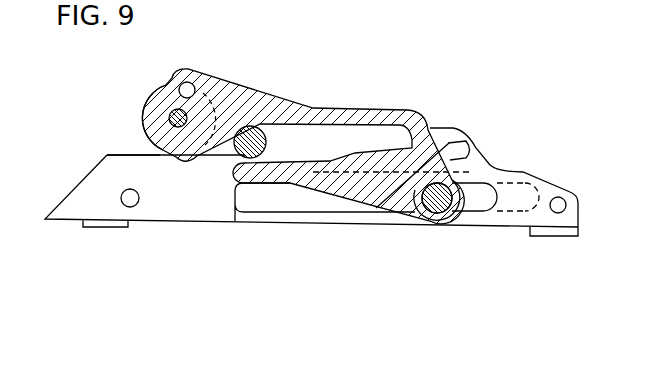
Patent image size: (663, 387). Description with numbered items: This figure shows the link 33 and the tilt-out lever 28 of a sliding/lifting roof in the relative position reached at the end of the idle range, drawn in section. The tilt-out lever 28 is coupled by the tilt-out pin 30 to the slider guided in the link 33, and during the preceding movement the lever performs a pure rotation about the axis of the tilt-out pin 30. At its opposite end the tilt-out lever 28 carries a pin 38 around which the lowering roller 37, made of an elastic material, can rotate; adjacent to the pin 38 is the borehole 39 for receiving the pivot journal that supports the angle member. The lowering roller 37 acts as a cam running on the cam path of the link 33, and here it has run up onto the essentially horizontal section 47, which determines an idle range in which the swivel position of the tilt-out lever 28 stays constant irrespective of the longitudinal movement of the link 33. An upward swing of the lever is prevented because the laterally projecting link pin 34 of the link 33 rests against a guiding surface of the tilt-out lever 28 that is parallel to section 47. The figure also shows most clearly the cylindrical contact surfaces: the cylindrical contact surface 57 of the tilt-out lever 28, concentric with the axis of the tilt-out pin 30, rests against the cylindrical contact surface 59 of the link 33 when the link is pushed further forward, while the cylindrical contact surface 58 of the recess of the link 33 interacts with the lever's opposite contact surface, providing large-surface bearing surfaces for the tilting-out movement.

The tilt-out lever 28 is at (398, 205).
The tilt-out pin 30 is at (424, 214).
The link 33 is at (190, 200).
The link pin 34 is at (248, 96).
The lowering roller 37 is at (148, 100).
The pin 38 is at (170, 122).
The borehole 39 is at (190, 83).
The section of the cam path 47 is at (128, 154).
The cylindrical contact surface 57 is at (455, 225).
The cylindrical contact surface 58 is at (465, 148).
The cylindrical contact surface 59 is at (478, 221).